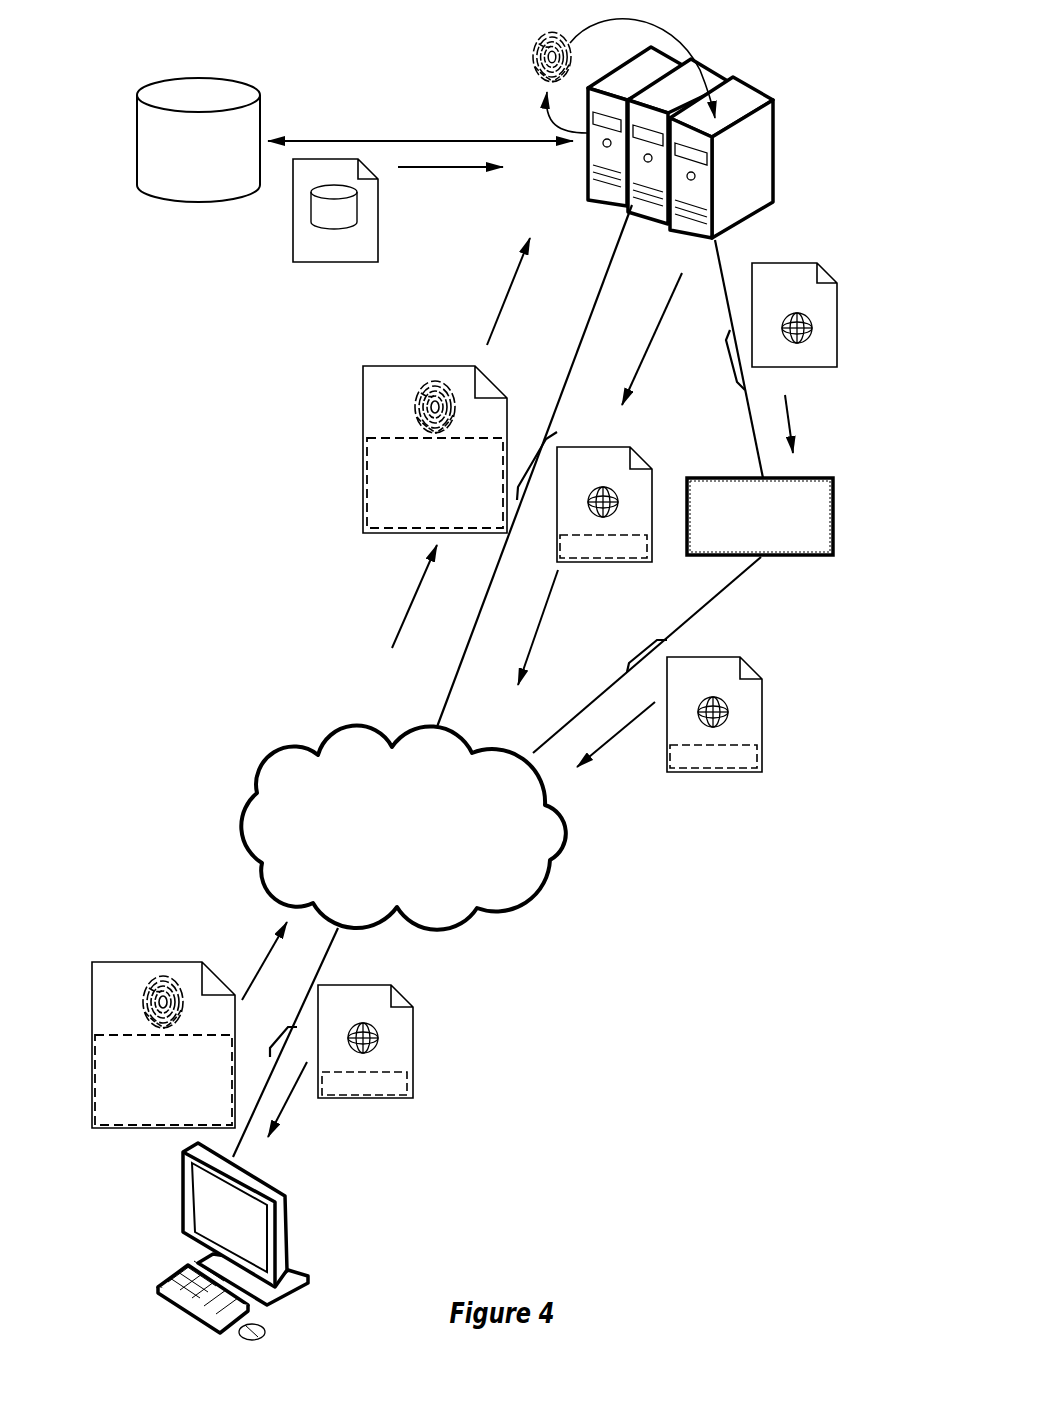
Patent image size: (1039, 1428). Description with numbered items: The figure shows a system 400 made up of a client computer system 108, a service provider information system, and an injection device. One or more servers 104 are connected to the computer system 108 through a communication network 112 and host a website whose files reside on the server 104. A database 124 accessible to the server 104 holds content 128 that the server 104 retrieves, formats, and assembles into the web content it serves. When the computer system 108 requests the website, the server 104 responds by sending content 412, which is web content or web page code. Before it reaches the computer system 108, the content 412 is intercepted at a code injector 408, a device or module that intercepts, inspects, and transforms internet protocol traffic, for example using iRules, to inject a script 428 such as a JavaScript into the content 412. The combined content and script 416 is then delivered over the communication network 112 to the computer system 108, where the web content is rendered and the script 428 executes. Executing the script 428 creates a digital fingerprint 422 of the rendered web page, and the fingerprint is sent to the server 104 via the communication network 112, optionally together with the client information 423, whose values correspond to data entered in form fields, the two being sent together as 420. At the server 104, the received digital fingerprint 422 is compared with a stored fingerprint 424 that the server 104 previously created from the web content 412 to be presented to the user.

The server 104 is at (773, 137).
The computer system 108 is at (267, 1175).
The communication network 112 is at (567, 825).
The database 124 is at (198, 97).
The content 128 is at (335, 263).
The computer system, service provider information system, and injection device 400 is at (867, 130).
The code injector 408 is at (833, 498).
The content 412 is at (833, 320).
The content and script 416 is at (575, 734).
The digital fingerprint and client information 420 is at (295, 716).
The digital fingerprint 422 is at (413, 410).
The client information 423 is at (375, 463).
The fingerprint 424 is at (533, 43).
The script 428 is at (645, 533).